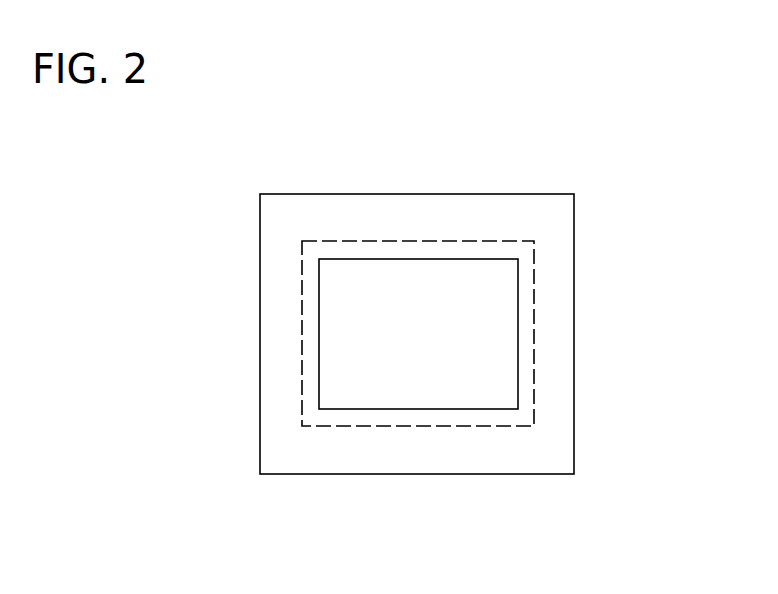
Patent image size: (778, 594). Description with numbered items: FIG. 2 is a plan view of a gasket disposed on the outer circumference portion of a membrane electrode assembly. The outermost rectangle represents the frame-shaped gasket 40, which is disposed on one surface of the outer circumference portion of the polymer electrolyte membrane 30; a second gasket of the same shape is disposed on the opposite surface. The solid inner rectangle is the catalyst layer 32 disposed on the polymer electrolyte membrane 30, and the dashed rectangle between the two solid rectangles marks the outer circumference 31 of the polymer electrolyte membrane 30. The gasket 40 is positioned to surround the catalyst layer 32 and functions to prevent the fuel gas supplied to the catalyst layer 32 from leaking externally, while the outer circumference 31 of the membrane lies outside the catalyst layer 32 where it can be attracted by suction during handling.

The gasket 40 is at (408, 457).
The outer circumference 31 is at (535, 350).
The polymer electrolyte membrane 30 is at (520, 388).
The catalyst layer 32 is at (495, 305).